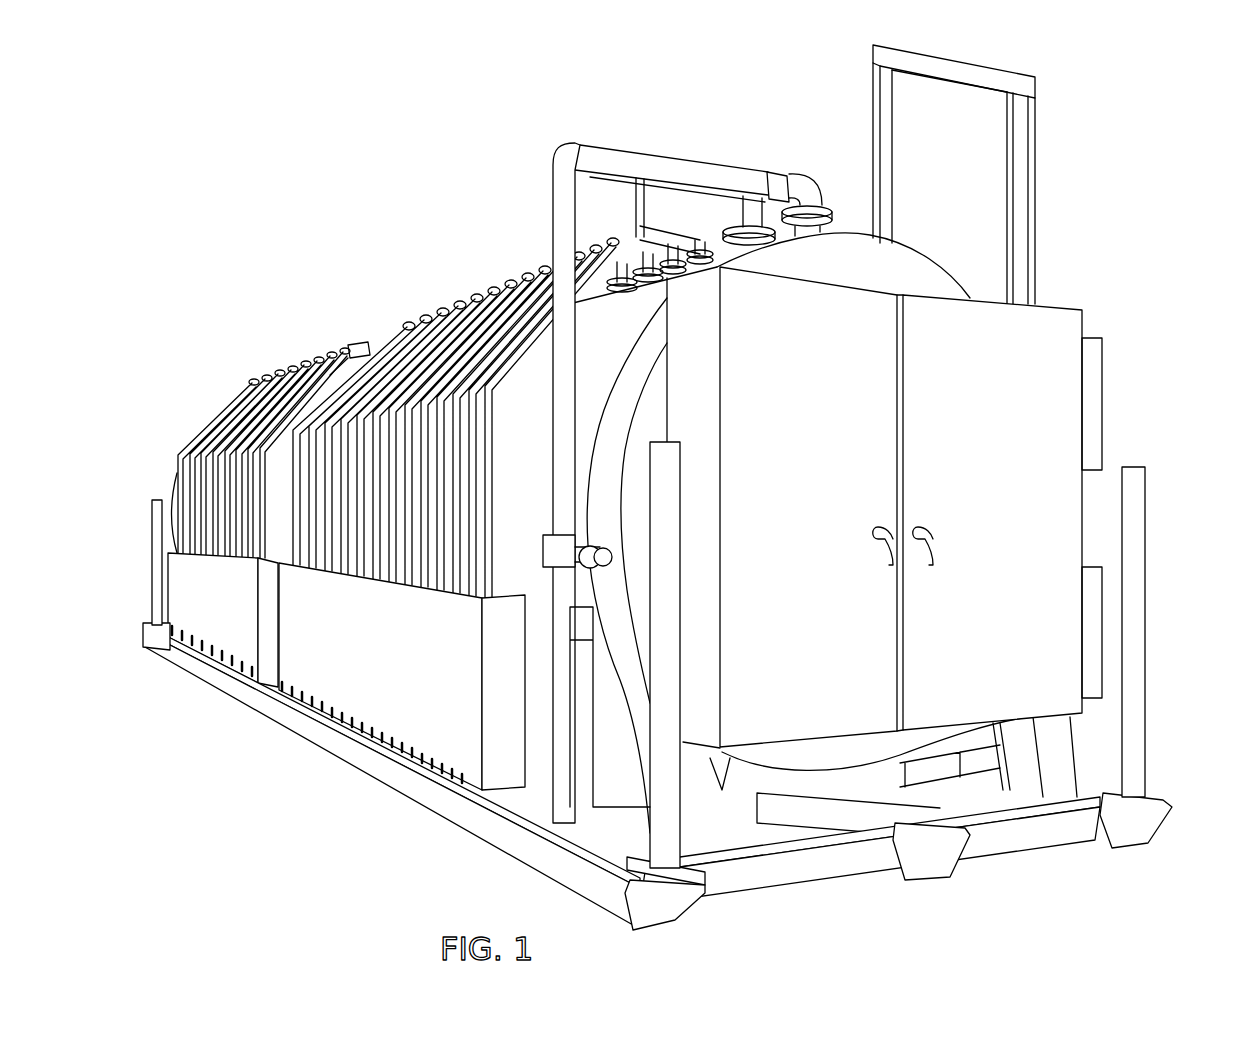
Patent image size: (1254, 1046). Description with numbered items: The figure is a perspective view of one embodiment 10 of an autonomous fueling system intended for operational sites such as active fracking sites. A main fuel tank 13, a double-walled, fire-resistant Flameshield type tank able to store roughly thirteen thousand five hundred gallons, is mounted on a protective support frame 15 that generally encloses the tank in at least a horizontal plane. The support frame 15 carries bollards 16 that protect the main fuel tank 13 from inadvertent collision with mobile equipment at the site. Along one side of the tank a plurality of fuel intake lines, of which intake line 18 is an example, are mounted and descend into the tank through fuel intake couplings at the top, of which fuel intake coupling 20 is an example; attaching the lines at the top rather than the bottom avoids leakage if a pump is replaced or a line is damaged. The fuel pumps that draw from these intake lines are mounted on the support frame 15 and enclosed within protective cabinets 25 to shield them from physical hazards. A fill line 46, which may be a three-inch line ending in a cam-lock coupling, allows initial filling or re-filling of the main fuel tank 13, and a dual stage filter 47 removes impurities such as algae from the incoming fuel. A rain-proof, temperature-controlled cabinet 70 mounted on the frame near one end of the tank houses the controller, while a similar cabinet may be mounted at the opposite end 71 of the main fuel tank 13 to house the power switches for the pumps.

The embodiment of the autonomous fueling system 10 is at (1094, 122).
The main fuel tank 13 is at (957, 282).
The protective support frame 15 is at (1157, 830).
The bollards 16 is at (153, 508).
The fuel intake line 18 is at (403, 330).
The fuel intake coupling 20 is at (708, 237).
The protective cabinets 25 is at (215, 627).
The fill line 46 is at (552, 225).
The dual stage filter 47 is at (543, 555).
The cabinet 70 is at (1082, 322).
The opposite end of the main fuel tank 71 is at (229, 379).